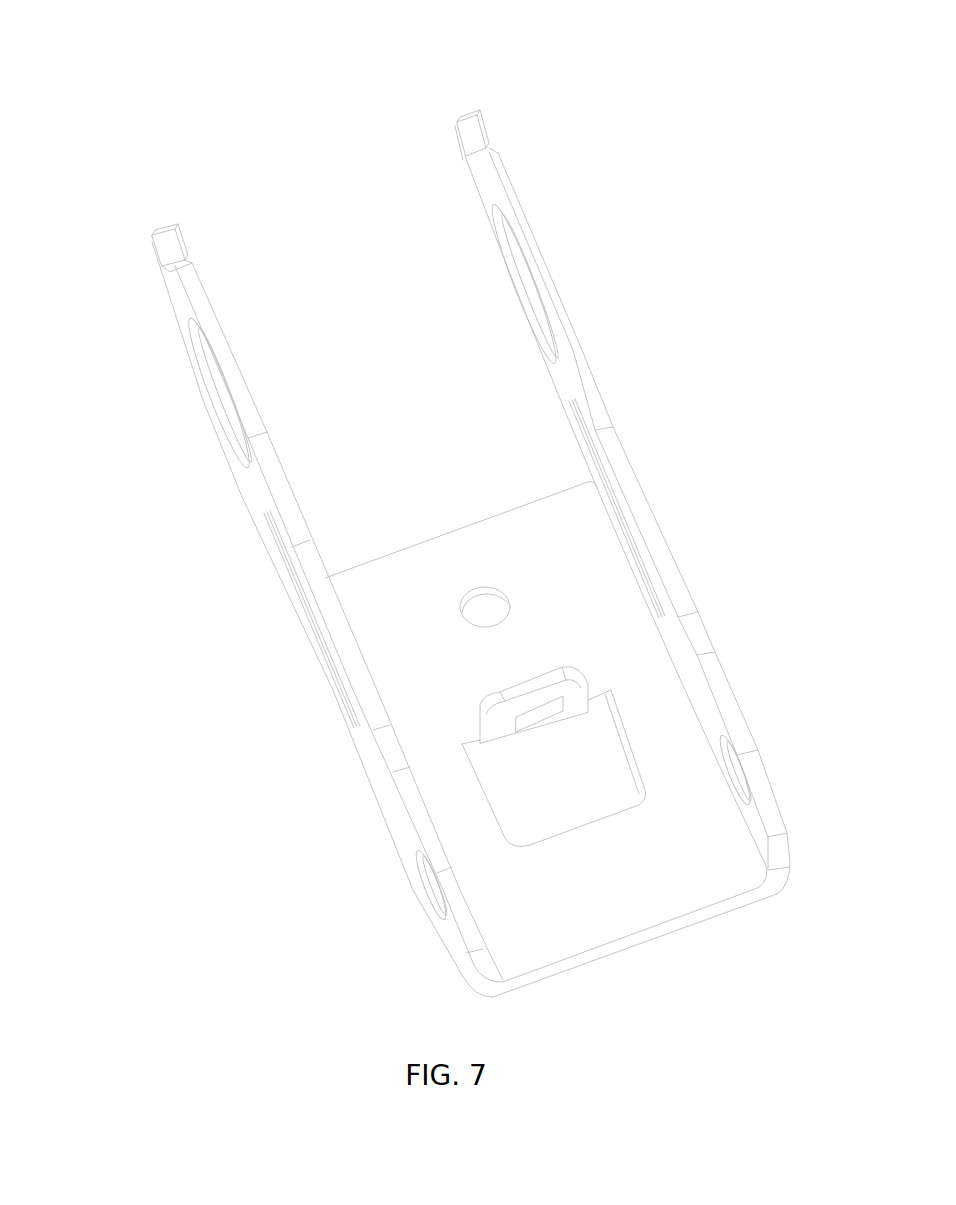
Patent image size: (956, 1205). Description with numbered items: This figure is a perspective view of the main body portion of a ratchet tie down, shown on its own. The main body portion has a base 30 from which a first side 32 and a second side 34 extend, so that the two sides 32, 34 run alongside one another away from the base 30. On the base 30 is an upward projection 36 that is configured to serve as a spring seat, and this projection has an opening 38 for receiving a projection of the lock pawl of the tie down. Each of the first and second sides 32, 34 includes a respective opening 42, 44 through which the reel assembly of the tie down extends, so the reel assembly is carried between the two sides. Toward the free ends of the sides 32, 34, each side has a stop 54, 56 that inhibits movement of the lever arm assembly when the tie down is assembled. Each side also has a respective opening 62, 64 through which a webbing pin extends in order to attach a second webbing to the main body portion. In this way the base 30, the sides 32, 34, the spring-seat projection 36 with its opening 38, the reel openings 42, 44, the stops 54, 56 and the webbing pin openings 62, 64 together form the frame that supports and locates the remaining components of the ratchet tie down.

The base 30 is at (488, 543).
The first side 32 is at (648, 502).
The second side 34 is at (380, 745).
The upward projection 36 is at (576, 690).
The opening 38 is at (538, 718).
The opening 42 is at (517, 258).
The opening 44 is at (217, 393).
The stop 54 is at (473, 137).
The stop 56 is at (170, 251).
The opening 62 is at (733, 773).
The opening 64 is at (432, 888).